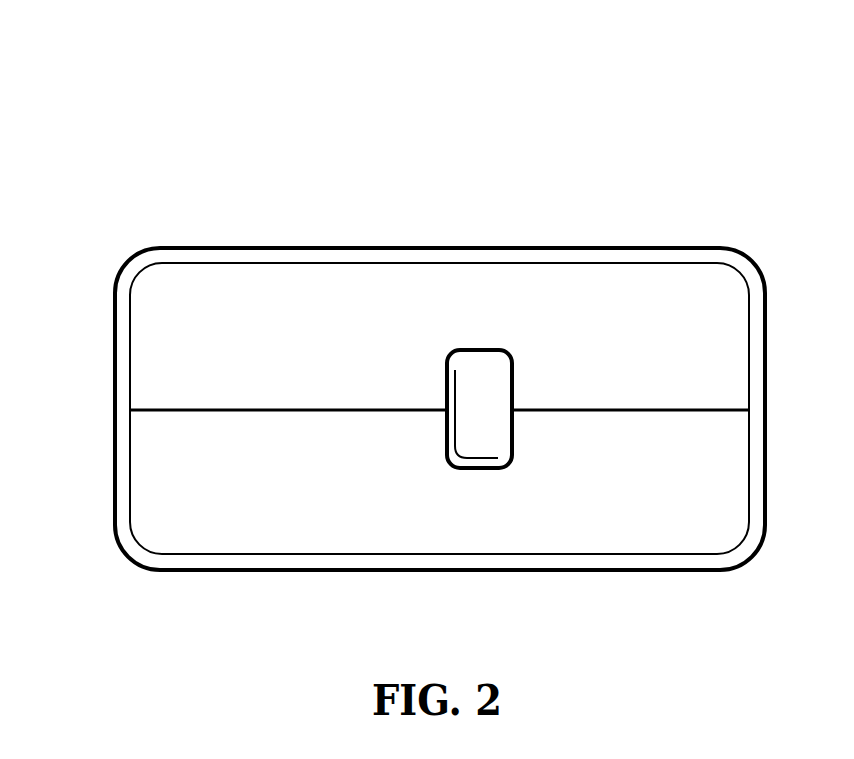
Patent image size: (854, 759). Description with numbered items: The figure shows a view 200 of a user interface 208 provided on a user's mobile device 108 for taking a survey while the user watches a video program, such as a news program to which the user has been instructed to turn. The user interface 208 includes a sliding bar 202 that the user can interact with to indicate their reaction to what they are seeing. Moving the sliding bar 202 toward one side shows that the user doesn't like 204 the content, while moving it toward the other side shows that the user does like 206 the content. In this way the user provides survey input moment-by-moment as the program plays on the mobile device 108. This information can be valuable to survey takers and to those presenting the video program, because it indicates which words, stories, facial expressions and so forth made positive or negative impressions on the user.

The user interface / remote control device view 200 is at (73, 136).
The mobile device 108 is at (640, 247).
The user interface 208 is at (246, 327).
The sliding bar 202 is at (480, 350).
The don't like 204 is at (282, 493).
The do like 206 is at (628, 492).